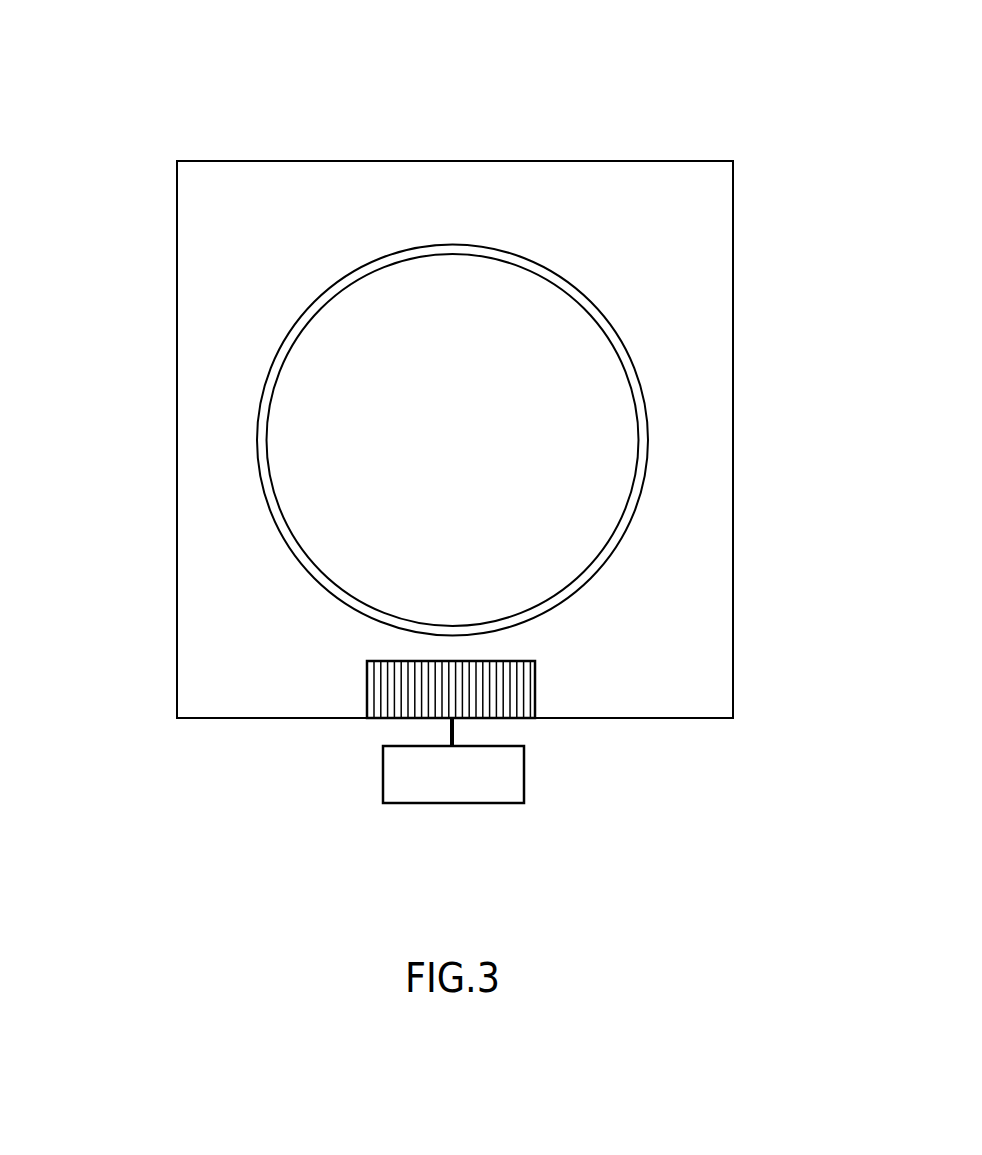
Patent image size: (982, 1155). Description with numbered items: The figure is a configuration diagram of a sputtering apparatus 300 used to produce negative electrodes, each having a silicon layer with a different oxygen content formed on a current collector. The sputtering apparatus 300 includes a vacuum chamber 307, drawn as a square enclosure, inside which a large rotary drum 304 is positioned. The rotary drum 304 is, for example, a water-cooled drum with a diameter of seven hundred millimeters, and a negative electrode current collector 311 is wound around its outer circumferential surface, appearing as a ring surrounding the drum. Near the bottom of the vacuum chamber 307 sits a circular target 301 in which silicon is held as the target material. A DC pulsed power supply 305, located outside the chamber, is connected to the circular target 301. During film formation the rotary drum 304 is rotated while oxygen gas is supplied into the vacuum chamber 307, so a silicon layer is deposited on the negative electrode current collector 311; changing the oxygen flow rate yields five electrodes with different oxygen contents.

The sputtering apparatus 300 is at (674, 95).
The circular target 301 is at (520, 688).
The rotary drum 304 is at (604, 435).
The DC pulsed power supply 305 is at (455, 775).
The vacuum chamber 307 is at (733, 321).
The negative electrode current collector 311 is at (258, 455).